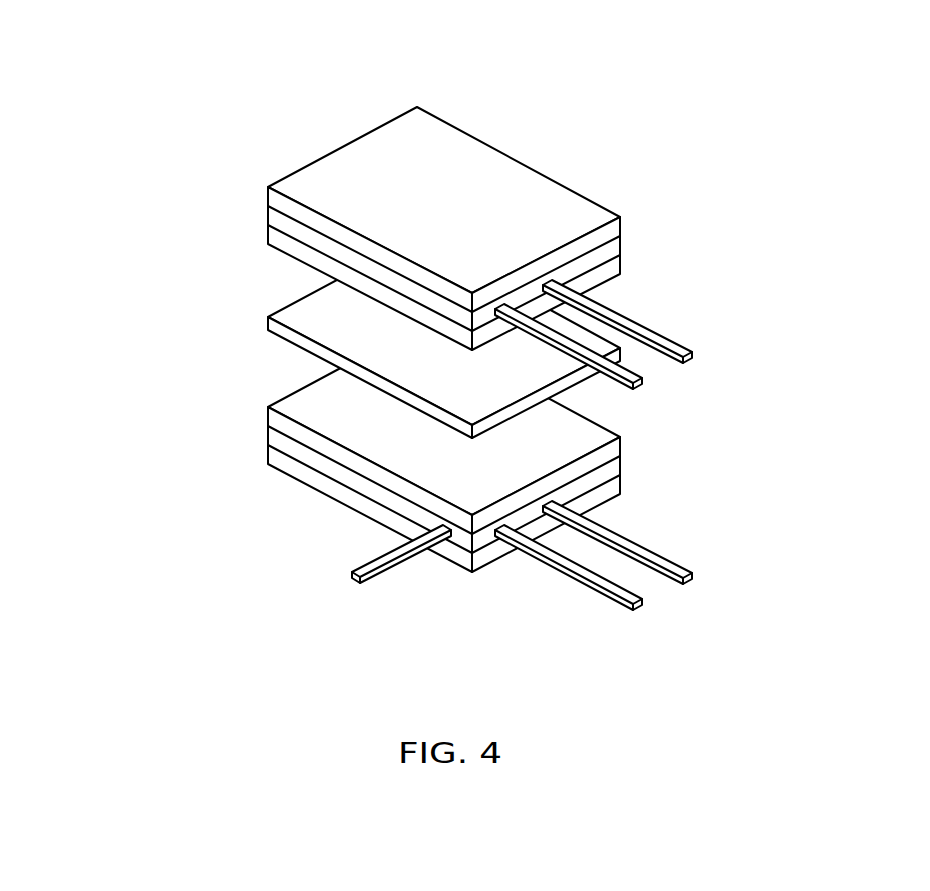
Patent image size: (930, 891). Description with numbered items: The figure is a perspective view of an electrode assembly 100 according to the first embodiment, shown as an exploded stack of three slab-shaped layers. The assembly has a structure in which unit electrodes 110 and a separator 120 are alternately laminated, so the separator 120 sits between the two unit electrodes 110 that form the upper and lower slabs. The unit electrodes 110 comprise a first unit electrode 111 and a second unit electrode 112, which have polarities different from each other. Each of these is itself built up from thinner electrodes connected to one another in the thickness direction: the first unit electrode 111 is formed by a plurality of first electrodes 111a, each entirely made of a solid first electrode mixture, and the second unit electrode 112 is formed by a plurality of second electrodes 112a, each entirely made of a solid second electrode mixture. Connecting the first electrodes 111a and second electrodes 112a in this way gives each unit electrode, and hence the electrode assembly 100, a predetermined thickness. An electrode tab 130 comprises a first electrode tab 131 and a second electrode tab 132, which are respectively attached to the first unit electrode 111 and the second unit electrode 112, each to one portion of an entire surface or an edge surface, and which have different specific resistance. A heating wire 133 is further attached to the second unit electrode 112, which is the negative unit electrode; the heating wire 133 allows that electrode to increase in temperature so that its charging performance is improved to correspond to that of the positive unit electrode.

The electrode assembly 100 is at (329, 66).
The unit electrode 110 is at (92, 220).
The first unit electrode 111 is at (145, 182).
The first electrode 111a is at (268, 200).
The second unit electrode 112 is at (145, 416).
The second electrode 112a is at (268, 421).
The separator 120 is at (268, 323).
The electrode tab 130 is at (757, 427).
The first electrode tab 131 is at (635, 385).
The second electrode tab 132 is at (687, 576).
The heating wire 133 is at (386, 573).